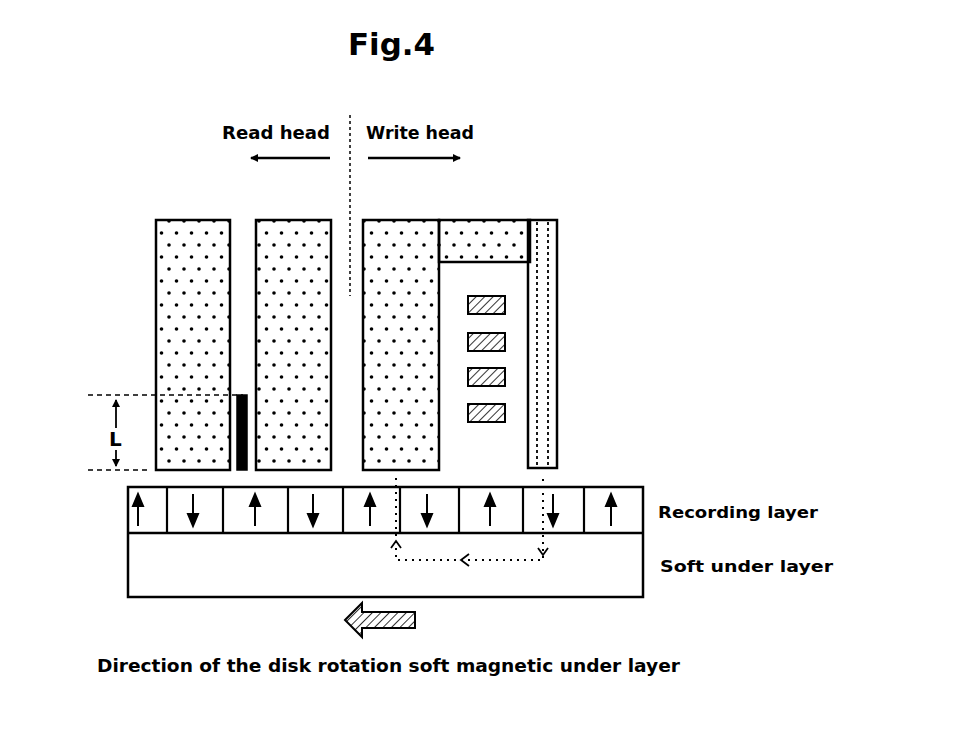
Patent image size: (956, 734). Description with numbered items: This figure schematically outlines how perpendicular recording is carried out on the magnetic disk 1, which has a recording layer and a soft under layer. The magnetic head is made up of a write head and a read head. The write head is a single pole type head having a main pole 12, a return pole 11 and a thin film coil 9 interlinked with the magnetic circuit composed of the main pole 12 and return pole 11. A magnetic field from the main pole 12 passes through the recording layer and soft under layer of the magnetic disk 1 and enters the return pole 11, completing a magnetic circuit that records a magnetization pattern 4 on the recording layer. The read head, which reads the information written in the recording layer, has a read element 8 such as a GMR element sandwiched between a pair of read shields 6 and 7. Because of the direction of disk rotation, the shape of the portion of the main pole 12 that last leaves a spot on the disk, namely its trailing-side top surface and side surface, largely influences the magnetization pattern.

The magnetic disk 1 is at (108, 487).
The magnetization pattern 4 is at (616, 507).
The read shield 6 is at (178, 238).
The read shield 7 is at (300, 228).
The read element 8 is at (238, 420).
The thin film coil 9 is at (503, 300).
The return pole 11 is at (403, 238).
The main pole 12 is at (548, 373).